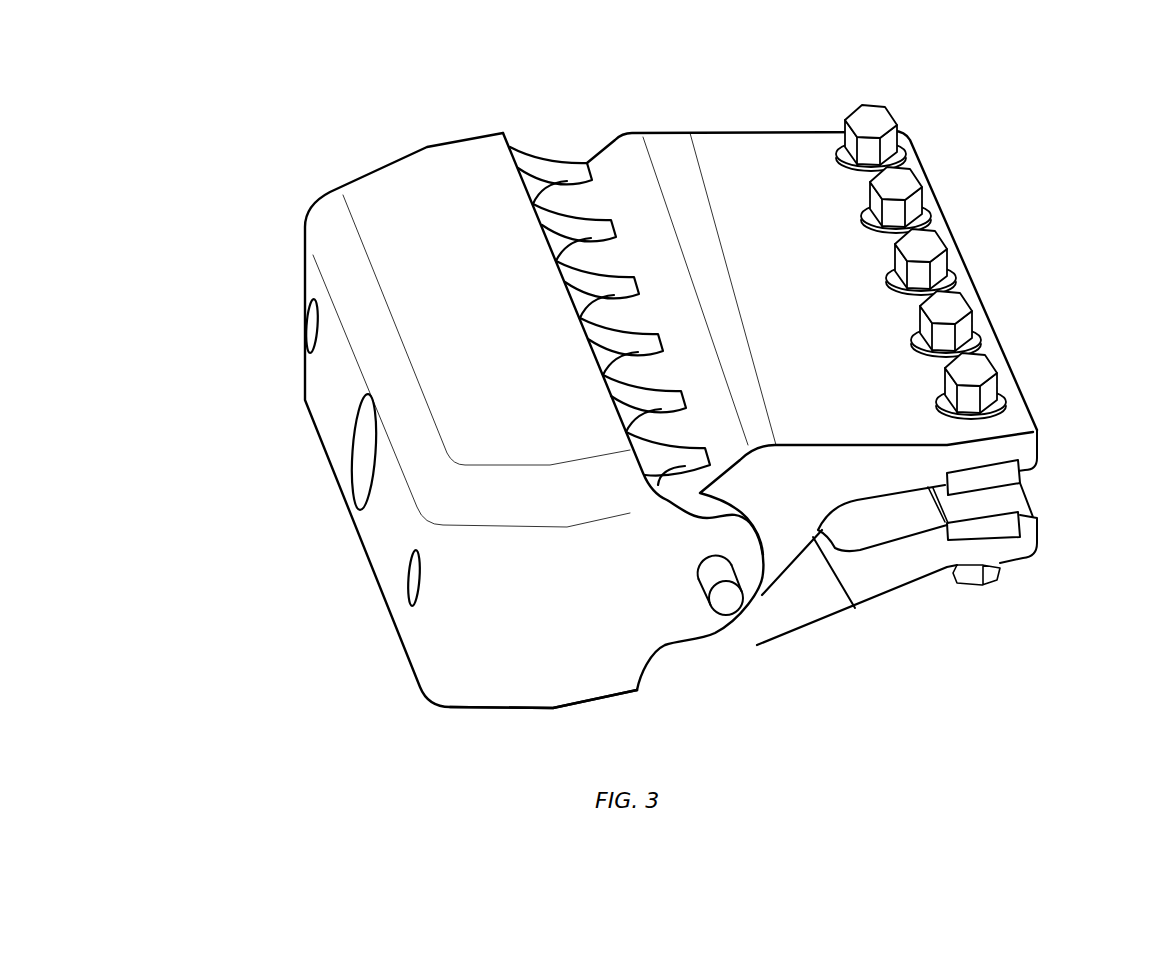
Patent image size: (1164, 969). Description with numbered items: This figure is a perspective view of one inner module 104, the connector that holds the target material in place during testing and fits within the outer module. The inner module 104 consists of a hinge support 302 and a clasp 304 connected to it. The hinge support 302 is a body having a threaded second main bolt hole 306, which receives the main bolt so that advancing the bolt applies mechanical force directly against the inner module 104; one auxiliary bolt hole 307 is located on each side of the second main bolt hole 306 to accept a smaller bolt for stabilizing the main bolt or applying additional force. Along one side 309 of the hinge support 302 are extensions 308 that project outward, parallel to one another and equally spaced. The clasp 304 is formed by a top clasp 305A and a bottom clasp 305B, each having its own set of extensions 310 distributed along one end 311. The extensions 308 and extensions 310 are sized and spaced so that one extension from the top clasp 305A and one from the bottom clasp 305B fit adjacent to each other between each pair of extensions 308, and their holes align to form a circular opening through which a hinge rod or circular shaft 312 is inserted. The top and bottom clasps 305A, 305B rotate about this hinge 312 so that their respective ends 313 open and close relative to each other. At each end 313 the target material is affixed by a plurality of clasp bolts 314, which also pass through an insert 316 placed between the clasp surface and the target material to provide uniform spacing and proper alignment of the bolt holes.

The inner module 104 is at (300, 103).
The hinge support 302 is at (388, 242).
The clasp 304 is at (793, 157).
The top clasp 305A is at (973, 583).
The bottom clasp 305B is at (882, 468).
The second main bolt hole 306 is at (363, 455).
The auxiliary bolt hole 307 is at (303, 322).
The extensions 308 is at (552, 170).
The side 309 is at (677, 547).
The extensions 310 is at (583, 257).
The end 311 is at (790, 507).
The hinge rod or circular shaft 312 is at (725, 600).
The end 313 is at (1038, 447).
The clasp bolts 314 is at (953, 310).
The insert 316 is at (1020, 478).